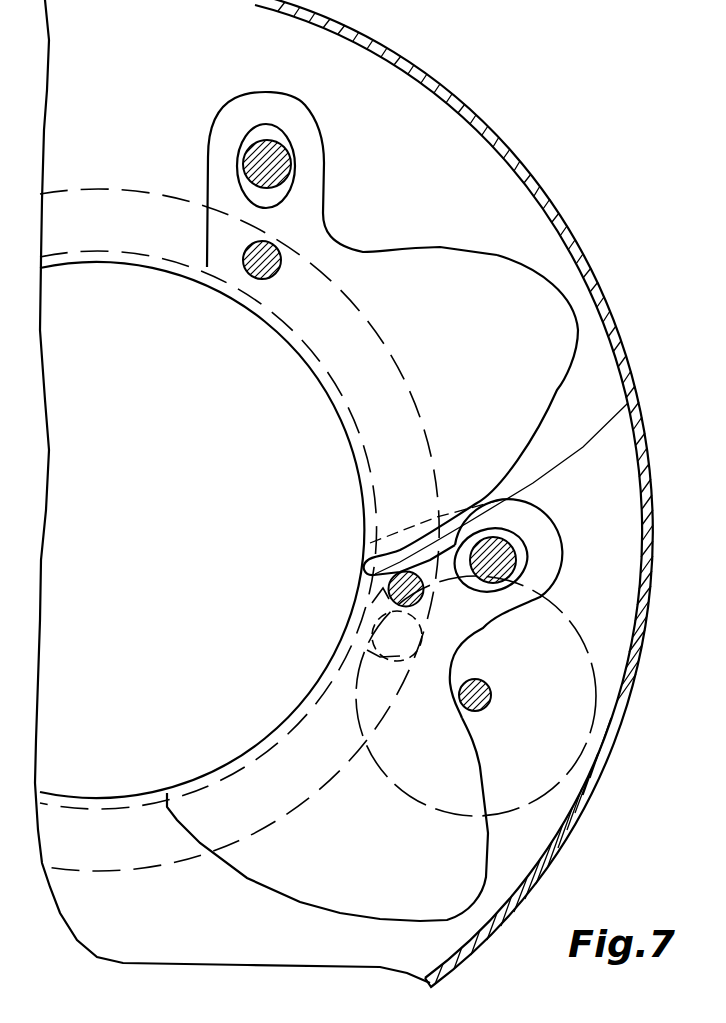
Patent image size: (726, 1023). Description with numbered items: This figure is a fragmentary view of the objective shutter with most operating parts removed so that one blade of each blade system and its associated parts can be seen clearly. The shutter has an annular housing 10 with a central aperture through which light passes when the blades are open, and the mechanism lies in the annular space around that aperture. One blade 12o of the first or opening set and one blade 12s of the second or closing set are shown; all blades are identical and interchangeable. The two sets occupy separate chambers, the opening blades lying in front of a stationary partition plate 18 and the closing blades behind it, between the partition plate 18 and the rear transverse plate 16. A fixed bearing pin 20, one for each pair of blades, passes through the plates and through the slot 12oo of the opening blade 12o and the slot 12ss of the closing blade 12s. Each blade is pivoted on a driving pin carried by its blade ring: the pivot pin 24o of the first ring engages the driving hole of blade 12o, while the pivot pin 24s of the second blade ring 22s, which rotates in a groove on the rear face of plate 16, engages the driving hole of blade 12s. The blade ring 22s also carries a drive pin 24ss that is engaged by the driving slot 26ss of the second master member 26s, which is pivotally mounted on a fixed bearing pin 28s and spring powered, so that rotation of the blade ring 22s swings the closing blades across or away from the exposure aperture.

The housing 10 is at (387, 53).
The transverse plate 16 is at (623, 440).
The partition plate 18 is at (427, 110).
The blade ring 22s is at (122, 262).
The slot 12oo is at (280, 130).
The blade of the opening system 12o is at (470, 262).
The slot 12ss is at (513, 535).
The blade of the closing system 12s is at (262, 880).
The bearing pin 20 is at (280, 165).
The pivot pin 24o is at (258, 266).
The pivot pin 24s is at (388, 573).
The drive pin 24ss is at (368, 648).
The second master member 26s is at (352, 678).
The driving slot 26ss is at (372, 603).
The bearing pin 28s is at (477, 692).